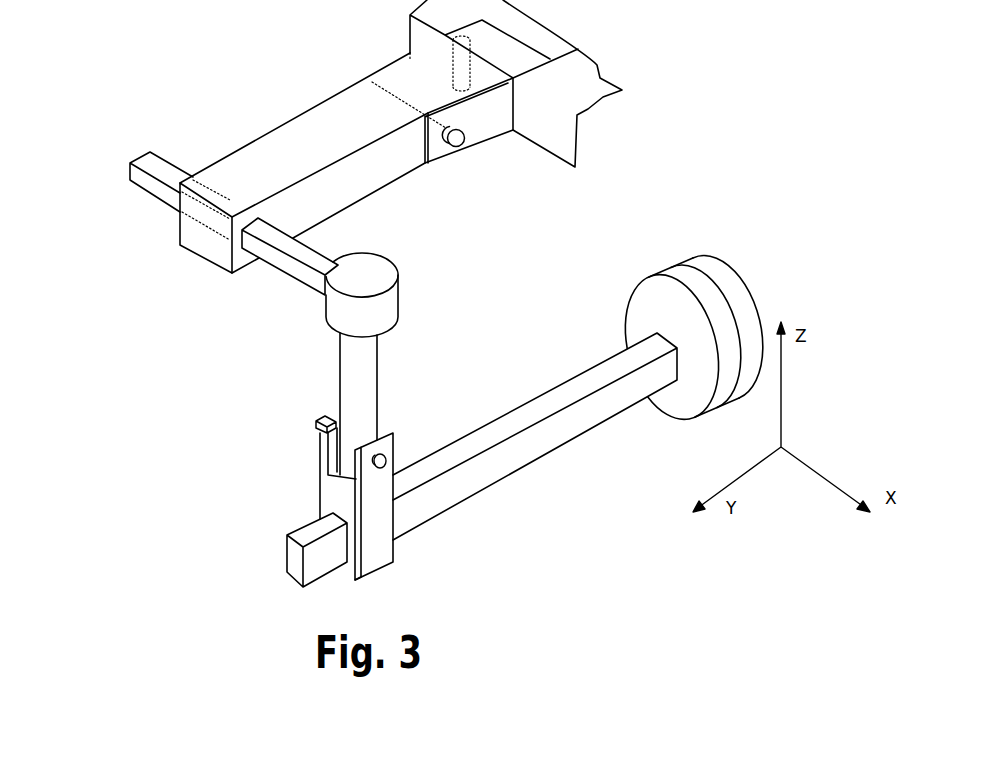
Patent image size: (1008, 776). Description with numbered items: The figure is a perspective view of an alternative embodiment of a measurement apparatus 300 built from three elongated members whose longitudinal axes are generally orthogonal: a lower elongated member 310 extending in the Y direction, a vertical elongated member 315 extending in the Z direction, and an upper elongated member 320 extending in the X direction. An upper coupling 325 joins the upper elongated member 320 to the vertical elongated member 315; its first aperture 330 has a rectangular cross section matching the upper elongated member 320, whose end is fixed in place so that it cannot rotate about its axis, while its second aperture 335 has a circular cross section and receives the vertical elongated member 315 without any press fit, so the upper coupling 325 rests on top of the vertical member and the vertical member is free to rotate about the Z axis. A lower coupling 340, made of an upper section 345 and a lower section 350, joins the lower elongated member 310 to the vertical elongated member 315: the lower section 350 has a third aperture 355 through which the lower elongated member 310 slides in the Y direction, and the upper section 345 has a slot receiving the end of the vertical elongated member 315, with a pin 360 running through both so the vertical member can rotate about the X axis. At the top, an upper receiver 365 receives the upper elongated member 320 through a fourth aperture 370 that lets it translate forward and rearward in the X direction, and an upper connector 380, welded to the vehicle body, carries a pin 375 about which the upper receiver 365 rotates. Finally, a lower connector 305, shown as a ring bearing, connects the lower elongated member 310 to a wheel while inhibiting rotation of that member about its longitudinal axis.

The measurement apparatus 300 is at (157, 503).
The lower connector 305 is at (692, 280).
The lower elongated member 310 is at (552, 442).
The vertical elongated member 315 is at (357, 355).
The upper elongated member 320 is at (153, 198).
The upper coupling 325 is at (383, 272).
The first aperture 330 is at (326, 296).
The second aperture 335 is at (380, 307).
The lower coupling 340 is at (333, 498).
The upper section 345 is at (323, 443).
The lower section 350 is at (392, 552).
The third aperture 355 is at (353, 573).
The pin 360 is at (325, 420).
The upper receiver 365 is at (278, 163).
The fourth aperture 370 is at (213, 262).
The pin 375 is at (458, 140).
The upper connector 380 is at (488, 115).